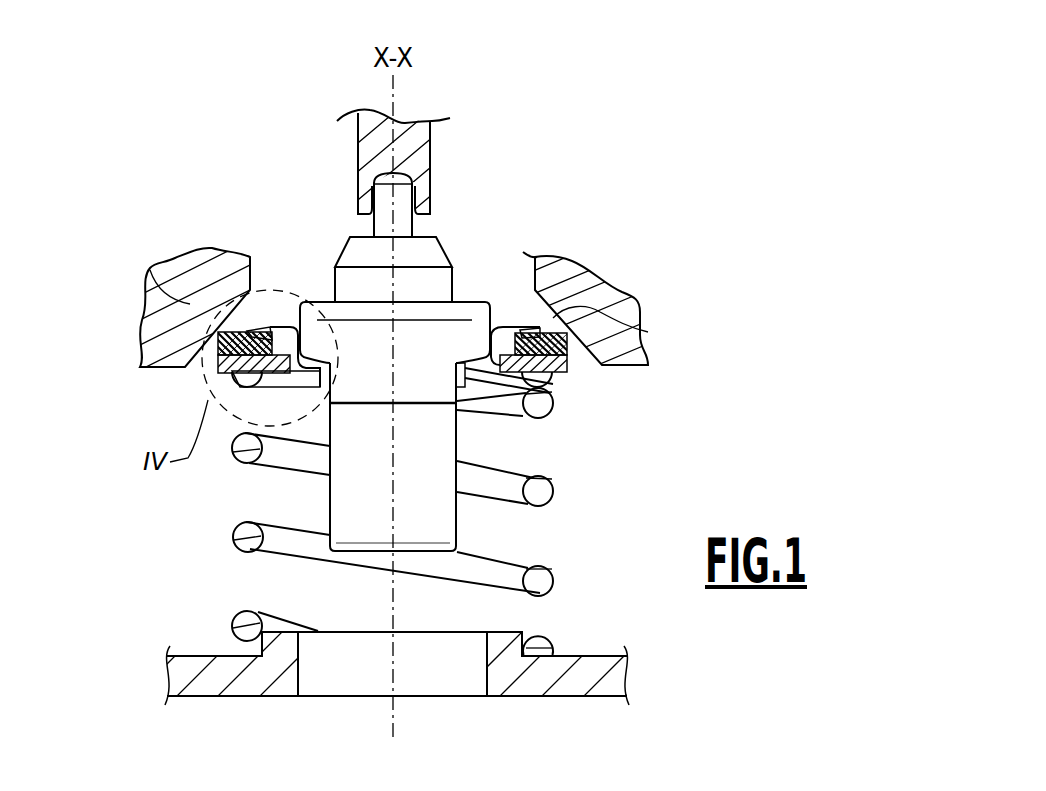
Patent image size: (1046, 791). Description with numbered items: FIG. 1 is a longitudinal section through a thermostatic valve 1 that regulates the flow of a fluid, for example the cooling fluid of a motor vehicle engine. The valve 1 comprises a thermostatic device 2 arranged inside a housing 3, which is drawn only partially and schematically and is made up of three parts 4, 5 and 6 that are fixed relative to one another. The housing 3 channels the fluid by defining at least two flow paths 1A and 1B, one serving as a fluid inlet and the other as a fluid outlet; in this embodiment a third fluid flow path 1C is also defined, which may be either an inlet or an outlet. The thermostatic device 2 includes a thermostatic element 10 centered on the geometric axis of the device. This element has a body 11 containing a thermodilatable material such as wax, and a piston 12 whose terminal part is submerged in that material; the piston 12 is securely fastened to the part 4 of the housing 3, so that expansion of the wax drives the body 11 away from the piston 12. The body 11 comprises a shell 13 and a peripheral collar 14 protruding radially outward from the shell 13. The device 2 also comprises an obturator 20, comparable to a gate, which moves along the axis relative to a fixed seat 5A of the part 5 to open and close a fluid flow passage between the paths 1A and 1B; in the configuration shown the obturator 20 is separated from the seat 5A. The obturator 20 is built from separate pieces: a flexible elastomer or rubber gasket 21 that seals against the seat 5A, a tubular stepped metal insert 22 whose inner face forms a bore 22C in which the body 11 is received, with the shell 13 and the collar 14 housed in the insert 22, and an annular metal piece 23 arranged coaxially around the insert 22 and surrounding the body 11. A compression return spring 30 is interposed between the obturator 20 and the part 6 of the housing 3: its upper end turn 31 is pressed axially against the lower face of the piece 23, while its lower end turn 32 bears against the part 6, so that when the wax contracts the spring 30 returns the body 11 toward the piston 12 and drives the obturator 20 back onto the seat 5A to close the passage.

The valve 1 is at (268, 113).
The fluid flow path 1A is at (277, 262).
The fluid flow path 1B is at (188, 522).
The support surface 1C is at (322, 698).
The thermostatic device 2 is at (777, 143).
The housing 3 is at (93, 182).
The part of the housing 4 is at (372, 145).
The part of the housing 5 is at (150, 272).
The seat 5A is at (215, 355).
The part of the housing 6 is at (187, 678).
The thermostatic element 10 is at (720, 107).
The body 11 is at (466, 290).
The piston 12 is at (402, 197).
The shell 13 is at (456, 517).
The peripheral collar 14 is at (473, 322).
The obturator 20 is at (720, 253).
The gasket 21 is at (572, 345).
The insert 22 is at (603, 277).
The bore 22C is at (312, 330).
The metal piece 23 is at (572, 410).
The return spring 30 is at (568, 492).
The upper end turn 31 is at (247, 382).
The lower end turn 32 is at (242, 628).